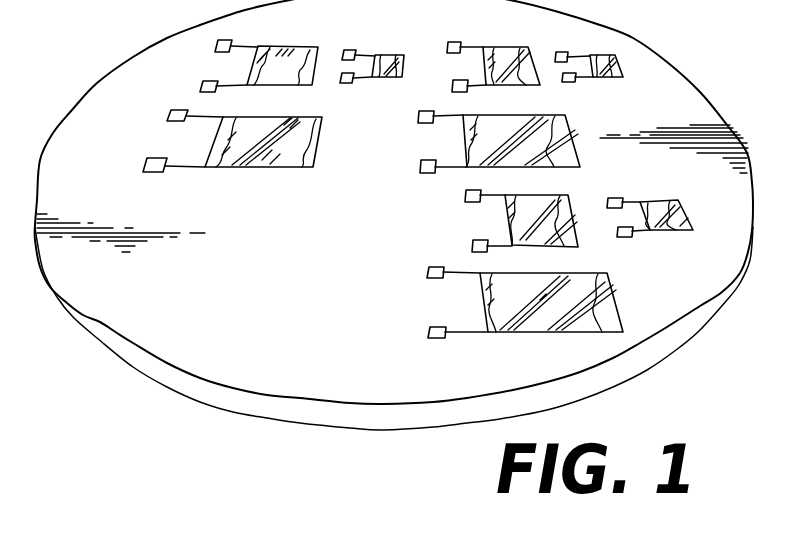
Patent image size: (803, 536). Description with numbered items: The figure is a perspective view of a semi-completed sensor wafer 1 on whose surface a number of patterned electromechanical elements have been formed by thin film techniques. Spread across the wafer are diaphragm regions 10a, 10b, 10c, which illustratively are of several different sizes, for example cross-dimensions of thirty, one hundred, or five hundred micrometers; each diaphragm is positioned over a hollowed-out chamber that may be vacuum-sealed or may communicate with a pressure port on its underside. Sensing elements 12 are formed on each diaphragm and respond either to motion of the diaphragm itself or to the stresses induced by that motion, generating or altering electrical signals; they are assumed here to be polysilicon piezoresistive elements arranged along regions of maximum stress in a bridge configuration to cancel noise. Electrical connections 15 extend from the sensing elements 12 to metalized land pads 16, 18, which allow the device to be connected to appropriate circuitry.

The sensor wafer 1 is at (657, 33).
The diaphragm region 10a is at (672, 203).
The diaphragm region 10b is at (557, 197).
The diaphragm region 10c is at (581, 302).
The sensing element 12 is at (580, 310).
The electrical connection 15 is at (504, 195).
The metalized pad 16 is at (465, 194).
The metalized pad 18 is at (478, 240).